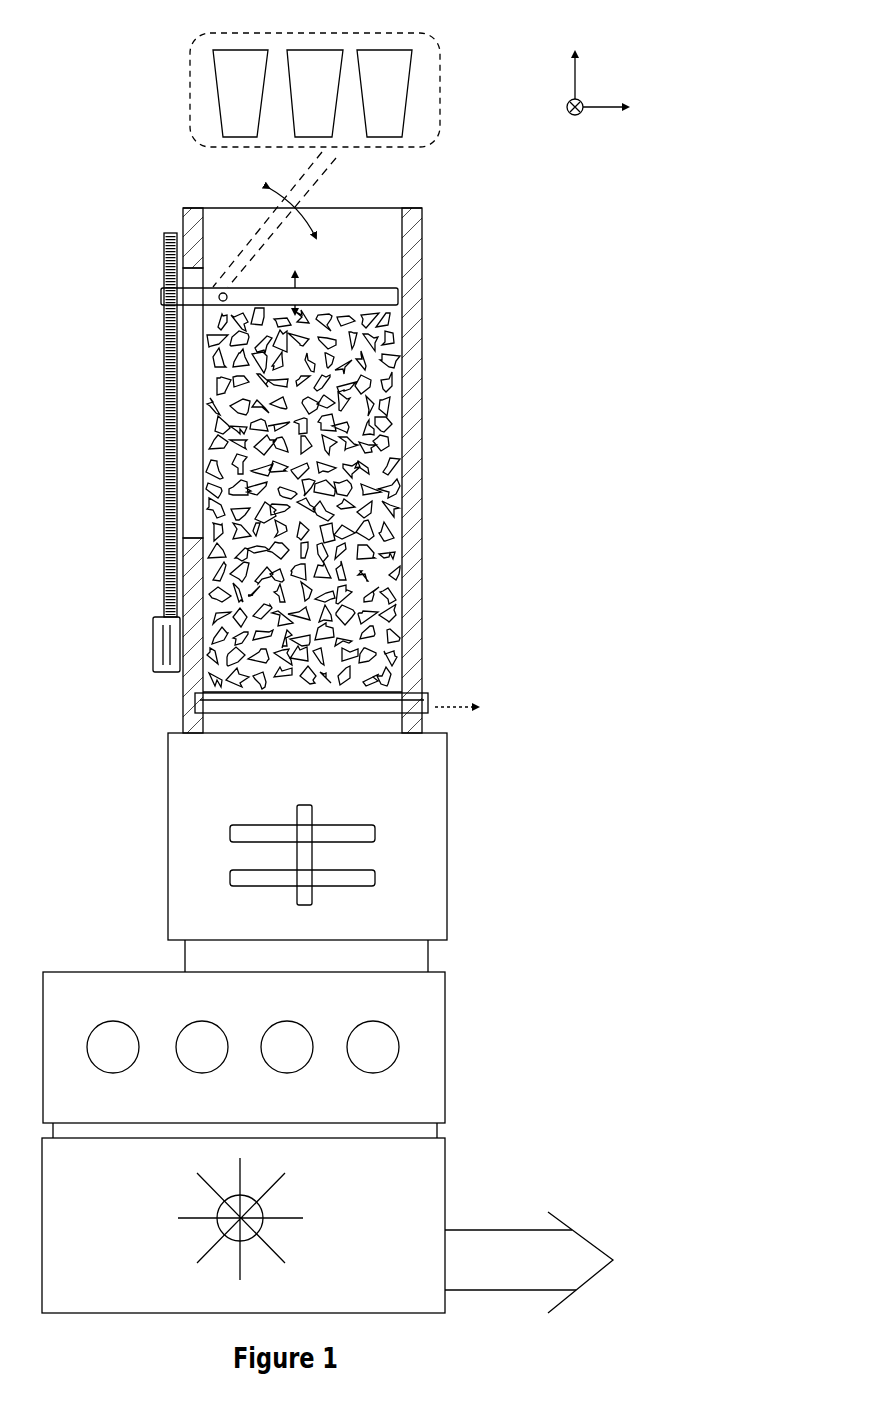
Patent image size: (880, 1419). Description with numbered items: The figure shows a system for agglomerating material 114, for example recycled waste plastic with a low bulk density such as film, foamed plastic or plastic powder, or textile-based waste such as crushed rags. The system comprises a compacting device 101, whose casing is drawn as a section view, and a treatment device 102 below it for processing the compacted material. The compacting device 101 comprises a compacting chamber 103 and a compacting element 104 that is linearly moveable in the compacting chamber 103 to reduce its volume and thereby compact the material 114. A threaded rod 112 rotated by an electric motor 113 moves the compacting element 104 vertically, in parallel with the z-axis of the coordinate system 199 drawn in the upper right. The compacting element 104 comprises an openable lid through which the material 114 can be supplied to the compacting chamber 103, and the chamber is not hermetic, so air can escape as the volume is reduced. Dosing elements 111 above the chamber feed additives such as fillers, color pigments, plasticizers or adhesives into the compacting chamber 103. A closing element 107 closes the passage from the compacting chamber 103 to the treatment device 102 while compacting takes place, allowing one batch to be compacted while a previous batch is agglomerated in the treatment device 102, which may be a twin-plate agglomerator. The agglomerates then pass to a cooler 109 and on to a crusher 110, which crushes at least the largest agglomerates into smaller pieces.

The compacting device 101 is at (183, 221).
The treatment device 102 is at (409, 784).
The compacting chamber 103 is at (392, 610).
The compacting element 104 is at (338, 288).
The closing element 107 is at (430, 700).
The cooler 109 is at (422, 1012).
The crusher 110 is at (417, 1182).
The dosing elements 111 is at (190, 97).
The threaded rod 112 is at (164, 402).
The electric motor 113 is at (153, 644).
The material 114 is at (405, 418).
The coordinate system 199 is at (622, 89).